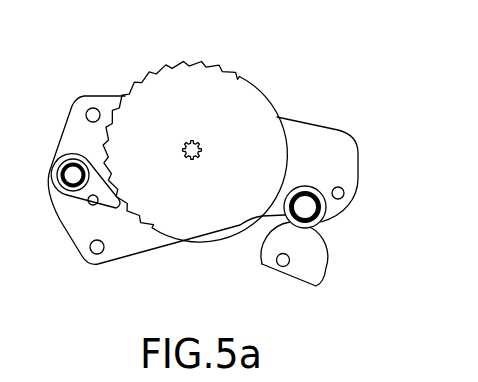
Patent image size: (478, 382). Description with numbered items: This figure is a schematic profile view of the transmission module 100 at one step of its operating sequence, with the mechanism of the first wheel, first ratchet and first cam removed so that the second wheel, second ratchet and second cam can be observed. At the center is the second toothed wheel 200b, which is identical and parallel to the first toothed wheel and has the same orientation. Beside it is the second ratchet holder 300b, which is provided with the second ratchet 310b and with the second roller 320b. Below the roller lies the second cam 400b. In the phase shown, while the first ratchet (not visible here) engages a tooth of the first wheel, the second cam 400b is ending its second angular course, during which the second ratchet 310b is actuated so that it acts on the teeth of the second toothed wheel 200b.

The transmission module 100 is at (371, 101).
The second toothed wheel 200b is at (240, 88).
The second ratchet holder 300b is at (98, 104).
The second ratchet 310b is at (80, 160).
The second roller 320b is at (307, 208).
The second cam 400b is at (312, 263).